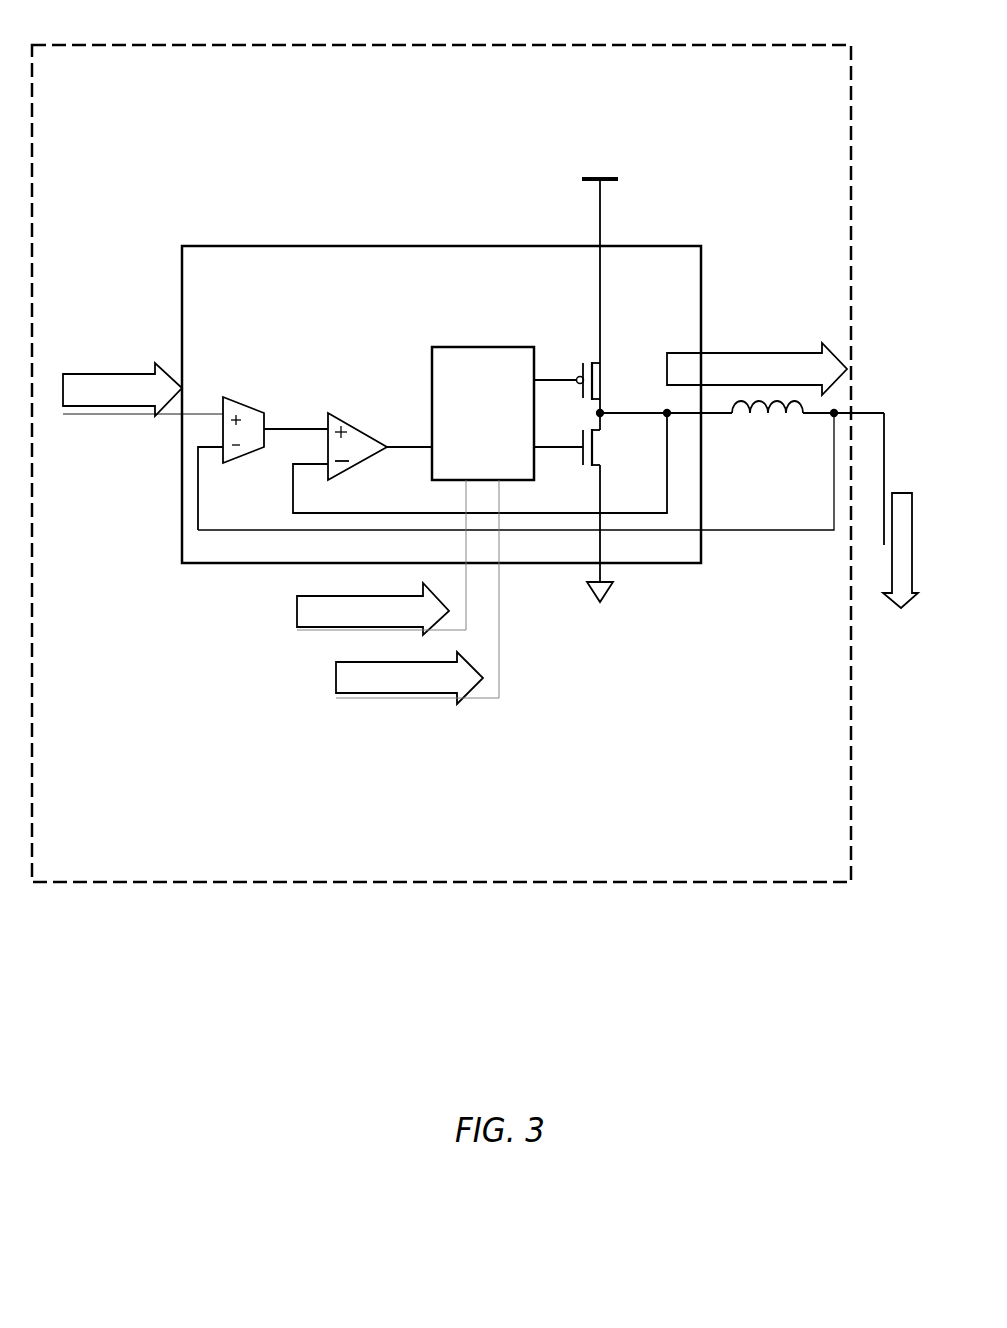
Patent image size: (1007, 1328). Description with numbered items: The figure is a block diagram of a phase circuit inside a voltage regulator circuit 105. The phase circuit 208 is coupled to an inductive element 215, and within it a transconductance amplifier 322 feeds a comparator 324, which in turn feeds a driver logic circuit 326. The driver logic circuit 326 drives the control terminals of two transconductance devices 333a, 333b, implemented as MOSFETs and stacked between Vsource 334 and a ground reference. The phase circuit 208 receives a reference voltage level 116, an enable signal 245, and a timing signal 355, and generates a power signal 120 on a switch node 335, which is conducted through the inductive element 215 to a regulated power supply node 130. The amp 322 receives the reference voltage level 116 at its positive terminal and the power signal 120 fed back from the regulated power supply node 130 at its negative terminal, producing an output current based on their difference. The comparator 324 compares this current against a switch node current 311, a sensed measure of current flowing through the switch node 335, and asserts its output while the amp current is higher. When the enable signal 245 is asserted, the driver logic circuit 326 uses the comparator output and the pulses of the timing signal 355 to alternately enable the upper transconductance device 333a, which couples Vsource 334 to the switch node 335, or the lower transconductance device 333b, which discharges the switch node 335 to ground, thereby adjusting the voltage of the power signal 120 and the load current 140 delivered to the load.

The voltage regulator circuit 105 is at (378, 89).
The phase circuit 208 is at (429, 295).
The reference voltage level 116 is at (100, 365).
The transconductance amplifier 322 is at (235, 391).
The comparator 324 is at (336, 408).
The driver logic circuit 326 is at (470, 443).
The Vsource 334 is at (646, 193).
The transconductance device Q333a 333a is at (647, 388).
The transconductance device Q333b 333b is at (647, 455).
The switch node 335 is at (670, 415).
The switch node current 311 is at (464, 505).
The inductive element L215 215 is at (784, 438).
The power signal 120 is at (812, 377).
The regulated power supply node 130 is at (889, 411).
The load current 140 is at (887, 671).
The enable signal 245 is at (434, 618).
The timing signal 355 is at (464, 685).